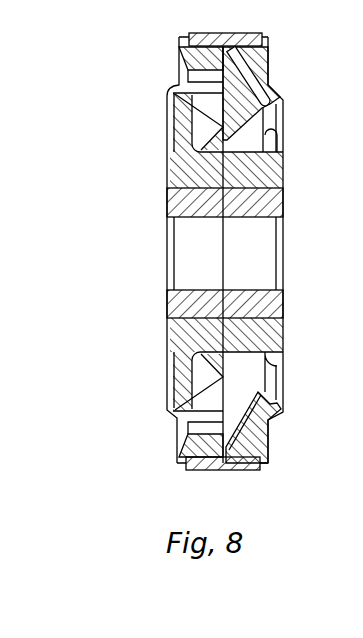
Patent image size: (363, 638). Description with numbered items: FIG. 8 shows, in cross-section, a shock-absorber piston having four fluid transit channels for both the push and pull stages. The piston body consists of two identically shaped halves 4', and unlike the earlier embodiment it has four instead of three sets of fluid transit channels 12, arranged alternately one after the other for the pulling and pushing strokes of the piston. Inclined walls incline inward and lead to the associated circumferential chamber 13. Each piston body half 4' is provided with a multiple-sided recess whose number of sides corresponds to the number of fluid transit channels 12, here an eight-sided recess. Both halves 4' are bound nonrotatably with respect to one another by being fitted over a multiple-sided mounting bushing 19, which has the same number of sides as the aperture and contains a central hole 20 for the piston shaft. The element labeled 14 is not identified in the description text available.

The piston body half 4' is at (224, 250).
The fluid transit channel 12 is at (225, 105).
The circumferential chamber 13 is at (172, 150).
The lower flange portion 14 is at (170, 418).
The mounting bushing 19 is at (260, 202).
The central hole 20 is at (243, 288).